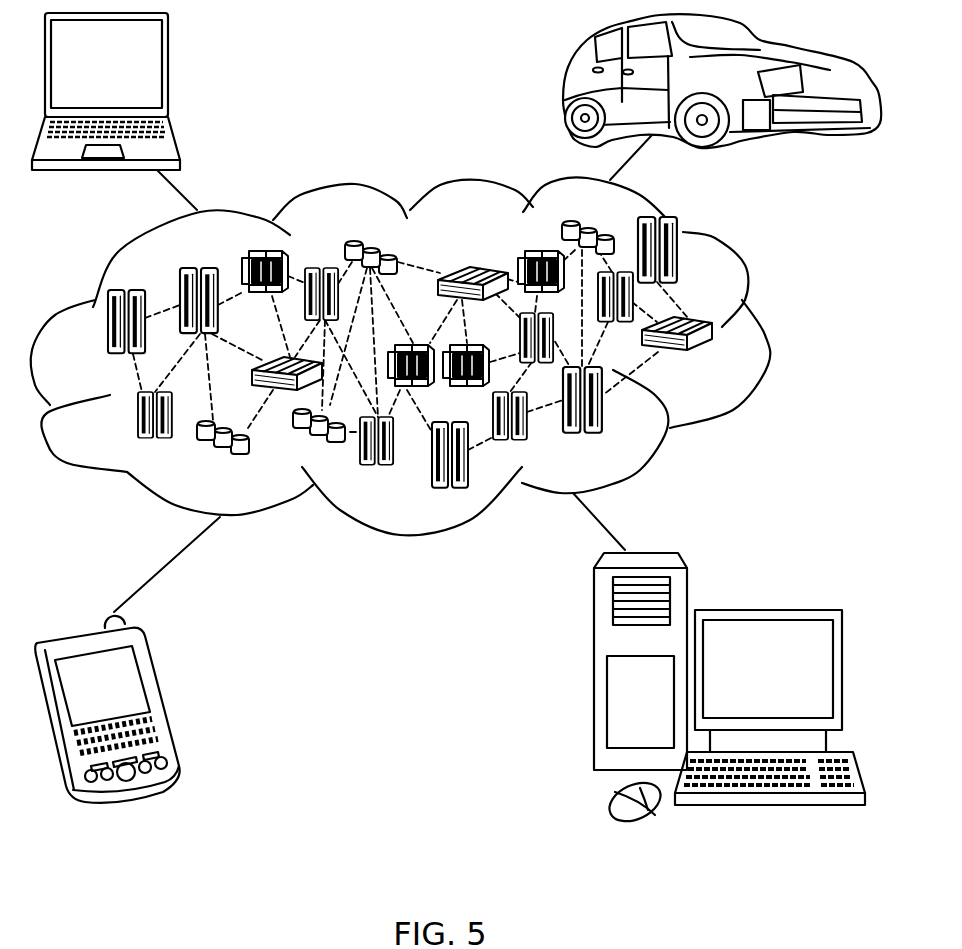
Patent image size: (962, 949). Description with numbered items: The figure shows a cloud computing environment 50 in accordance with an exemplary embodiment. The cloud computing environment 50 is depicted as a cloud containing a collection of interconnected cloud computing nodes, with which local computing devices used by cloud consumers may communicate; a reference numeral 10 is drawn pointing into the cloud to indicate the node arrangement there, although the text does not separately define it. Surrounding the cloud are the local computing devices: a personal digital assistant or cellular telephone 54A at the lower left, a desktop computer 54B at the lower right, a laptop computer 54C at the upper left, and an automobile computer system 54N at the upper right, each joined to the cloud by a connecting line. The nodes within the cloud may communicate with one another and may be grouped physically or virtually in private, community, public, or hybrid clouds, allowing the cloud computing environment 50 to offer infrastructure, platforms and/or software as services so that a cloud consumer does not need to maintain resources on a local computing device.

The cloud computing node 10 is at (724, 367).
The cloud computing environment 50 is at (766, 332).
The personal digital assistant (PDA) or cellular telephone 54A is at (160, 698).
The desktop computer 54B is at (766, 608).
The laptop computer 54C is at (169, 71).
The automobile computer system 54N is at (565, 86).